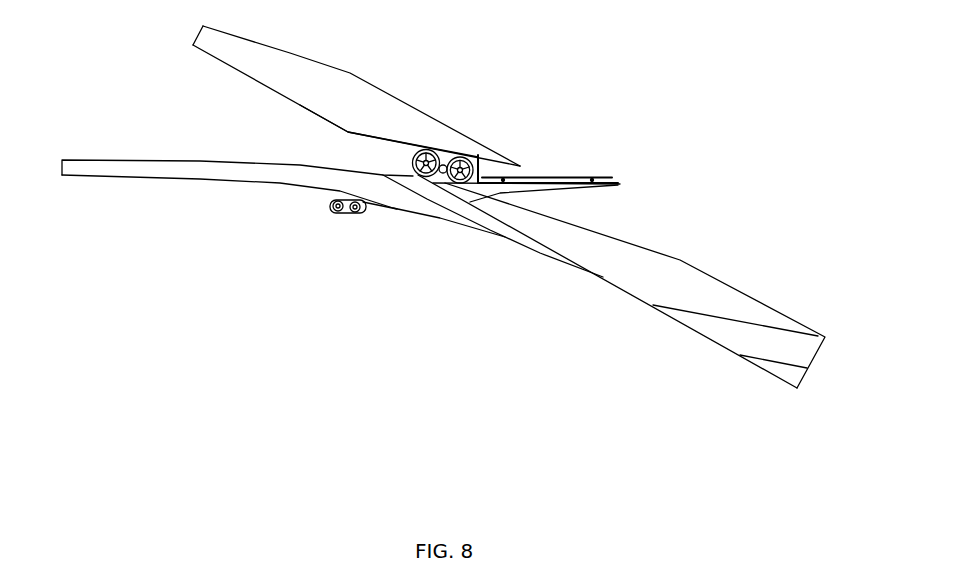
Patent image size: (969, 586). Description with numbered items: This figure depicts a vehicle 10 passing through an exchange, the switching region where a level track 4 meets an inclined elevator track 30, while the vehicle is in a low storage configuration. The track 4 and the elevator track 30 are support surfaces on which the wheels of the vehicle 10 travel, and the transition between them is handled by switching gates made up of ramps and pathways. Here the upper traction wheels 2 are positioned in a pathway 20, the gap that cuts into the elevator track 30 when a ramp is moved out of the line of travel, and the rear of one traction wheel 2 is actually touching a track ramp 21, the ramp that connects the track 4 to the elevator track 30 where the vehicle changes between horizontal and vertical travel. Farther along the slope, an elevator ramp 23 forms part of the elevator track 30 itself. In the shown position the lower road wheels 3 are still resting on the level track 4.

The traction wheels 2 is at (440, 156).
The road wheels 3 is at (338, 216).
The track 4 is at (208, 182).
The vehicle 10 is at (567, 177).
The pathway 20 is at (340, 143).
The track ramp 21 is at (505, 237).
The elevator ramp 23 is at (707, 332).
The elevator track 30 is at (380, 88).